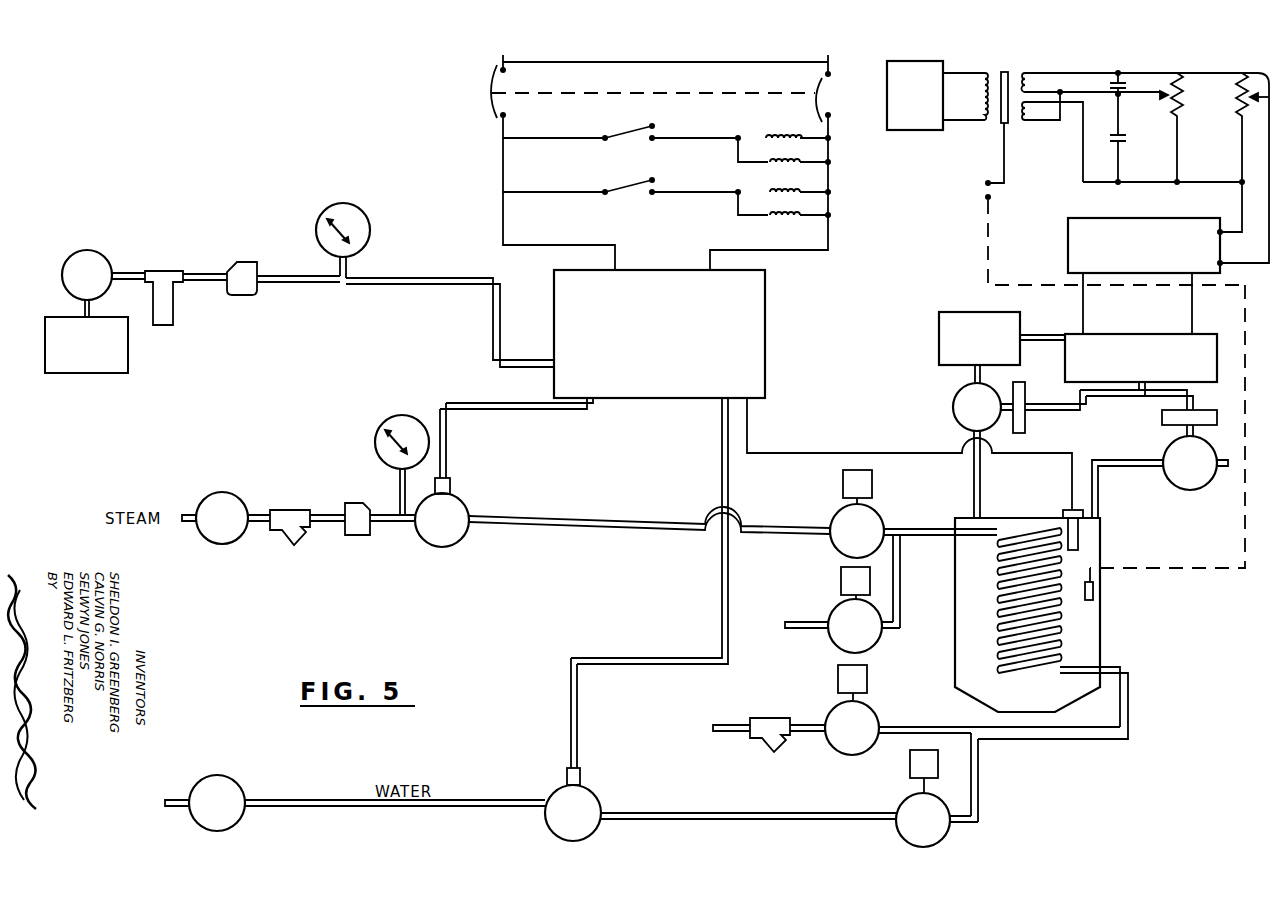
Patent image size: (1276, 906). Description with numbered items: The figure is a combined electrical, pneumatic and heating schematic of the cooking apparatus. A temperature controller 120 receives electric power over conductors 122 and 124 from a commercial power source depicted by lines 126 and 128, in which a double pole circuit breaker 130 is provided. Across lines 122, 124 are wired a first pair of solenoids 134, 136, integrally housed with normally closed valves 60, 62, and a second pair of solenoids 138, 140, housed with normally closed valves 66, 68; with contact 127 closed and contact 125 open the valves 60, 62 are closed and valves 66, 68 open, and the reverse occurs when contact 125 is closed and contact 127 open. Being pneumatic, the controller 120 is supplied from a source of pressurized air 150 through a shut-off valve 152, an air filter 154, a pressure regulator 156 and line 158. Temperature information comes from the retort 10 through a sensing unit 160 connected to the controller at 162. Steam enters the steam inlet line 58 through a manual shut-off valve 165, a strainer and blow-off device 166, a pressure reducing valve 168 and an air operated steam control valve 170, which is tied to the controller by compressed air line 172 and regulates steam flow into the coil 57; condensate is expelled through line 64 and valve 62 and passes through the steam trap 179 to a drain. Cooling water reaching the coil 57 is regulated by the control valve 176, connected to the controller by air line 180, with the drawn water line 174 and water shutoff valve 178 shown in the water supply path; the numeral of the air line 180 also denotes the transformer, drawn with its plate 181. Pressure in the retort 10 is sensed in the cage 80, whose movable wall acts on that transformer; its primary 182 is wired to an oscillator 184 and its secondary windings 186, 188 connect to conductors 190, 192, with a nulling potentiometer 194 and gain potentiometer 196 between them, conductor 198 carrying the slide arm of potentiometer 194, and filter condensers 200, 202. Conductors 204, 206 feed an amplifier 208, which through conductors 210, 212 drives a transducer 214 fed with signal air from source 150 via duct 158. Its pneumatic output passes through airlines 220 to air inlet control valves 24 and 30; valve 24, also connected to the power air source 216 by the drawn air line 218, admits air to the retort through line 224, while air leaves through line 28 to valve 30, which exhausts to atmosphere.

The retort 10 is at (1090, 634).
The air operated air inlet control valve 24 is at (955, 395).
The line 28 is at (1108, 478).
The air operated air inlet control valve 30 is at (1168, 450).
The coil 57 is at (997, 615).
The steam inlet line 58 is at (575, 526).
The normally closed valve 60 is at (833, 521).
The normally closed valve 62 is at (870, 714).
The line 64 is at (1128, 700).
The normally closed valve 66 is at (877, 642).
The normally closed valve 68 is at (944, 832).
The cage 80 is at (1094, 591).
The temperature controller 120 is at (554, 300).
The conductor 122 is at (831, 184).
The conductor 124 is at (503, 180).
The contact 125 is at (628, 128).
The power source line 126 is at (508, 68).
The contact 127 is at (628, 181).
The power source line 128 is at (830, 70).
The double pole circuit breaker 130 is at (648, 93).
The solenoid 134 is at (768, 136).
The solenoid 136 is at (772, 166).
The solenoid 138 is at (792, 190).
The solenoid 140 is at (788, 220).
The source of pressurized air 150 is at (128, 338).
The shut-off valve 152 is at (78, 252).
The air filter 154 is at (155, 272).
The pressure regulator 156 is at (248, 263).
The line 158 is at (494, 325).
The sensing unit 160 is at (1082, 532).
The connection 162 is at (864, 453).
The manual shut-off valve 165 is at (230, 498).
The strainer and blow-off device 166 is at (283, 535).
The pressure reducing valve 168 is at (350, 503).
The air operated steam control valve 170 is at (462, 512).
The compressed air line 172 is at (503, 410).
The water line 174 is at (650, 813).
The control valve 176 is at (557, 800).
The water shutoff valve 178 is at (232, 796).
The steam trap 179 is at (770, 718).
The air line 180 is at (578, 710).
The plate electrode 181 is at (1002, 123).
The primary 182 is at (983, 75).
The oscillator 184 is at (900, 130).
The secondary winding 186 is at (1027, 75).
The secondary winding 188 is at (1027, 120).
The conductor 190 is at (1156, 72).
The conductor 192 is at (1184, 182).
The nulling potentiometer 194 is at (1185, 108).
The gain potentiometer 196 is at (1242, 102).
The conductor 198 is at (1102, 92).
The filter condenser 200 is at (1106, 78).
The filter condenser 202 is at (1113, 148).
The conductor 204 is at (1242, 206).
The conductor 206 is at (1266, 74).
The amplifier 208 is at (1068, 242).
The conductor 210 is at (1085, 286).
The conductor 212 is at (1194, 288).
The transducer 214 is at (1125, 334).
The power air source 216 is at (966, 312).
The air line 218 is at (968, 376).
The airline 220 is at (1036, 412).
The line 224 is at (982, 486).